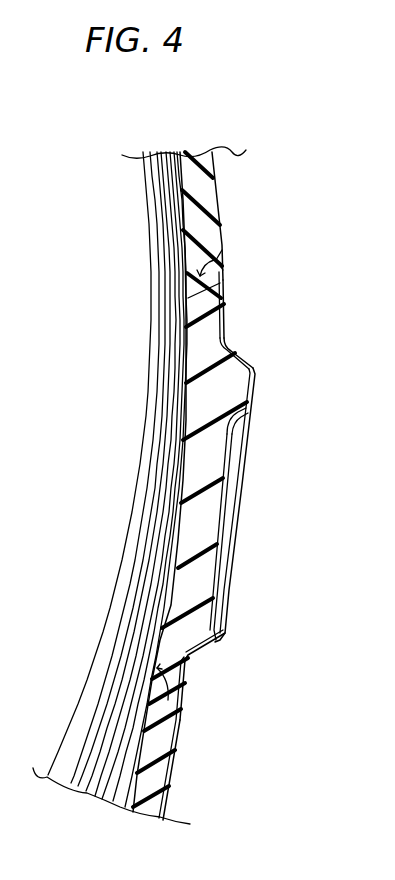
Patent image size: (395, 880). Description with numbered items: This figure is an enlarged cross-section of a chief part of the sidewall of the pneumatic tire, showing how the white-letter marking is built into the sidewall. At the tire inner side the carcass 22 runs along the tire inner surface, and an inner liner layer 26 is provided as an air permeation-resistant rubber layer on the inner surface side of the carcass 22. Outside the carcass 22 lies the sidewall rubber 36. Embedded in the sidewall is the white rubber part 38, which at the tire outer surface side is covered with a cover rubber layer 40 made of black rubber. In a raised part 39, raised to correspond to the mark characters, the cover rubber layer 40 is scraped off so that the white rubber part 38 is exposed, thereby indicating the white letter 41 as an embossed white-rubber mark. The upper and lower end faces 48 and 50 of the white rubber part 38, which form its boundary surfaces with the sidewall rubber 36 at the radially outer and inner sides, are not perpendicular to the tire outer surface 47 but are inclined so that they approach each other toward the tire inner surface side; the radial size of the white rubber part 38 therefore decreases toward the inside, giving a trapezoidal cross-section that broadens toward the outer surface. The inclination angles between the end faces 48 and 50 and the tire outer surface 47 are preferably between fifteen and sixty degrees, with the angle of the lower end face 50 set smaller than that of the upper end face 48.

The carcass 22 is at (165, 248).
The inner liner layer 26 is at (148, 436).
The sidewall rubber 36 is at (218, 196).
The white rubber part 38 is at (197, 620).
The raised part 39 is at (232, 617).
The cover rubber layer 40 is at (233, 456).
The white letter 41 is at (256, 376).
The tire outer surface 47 is at (228, 322).
The upper end face 48 is at (226, 247).
The lower end face 50 is at (176, 752).